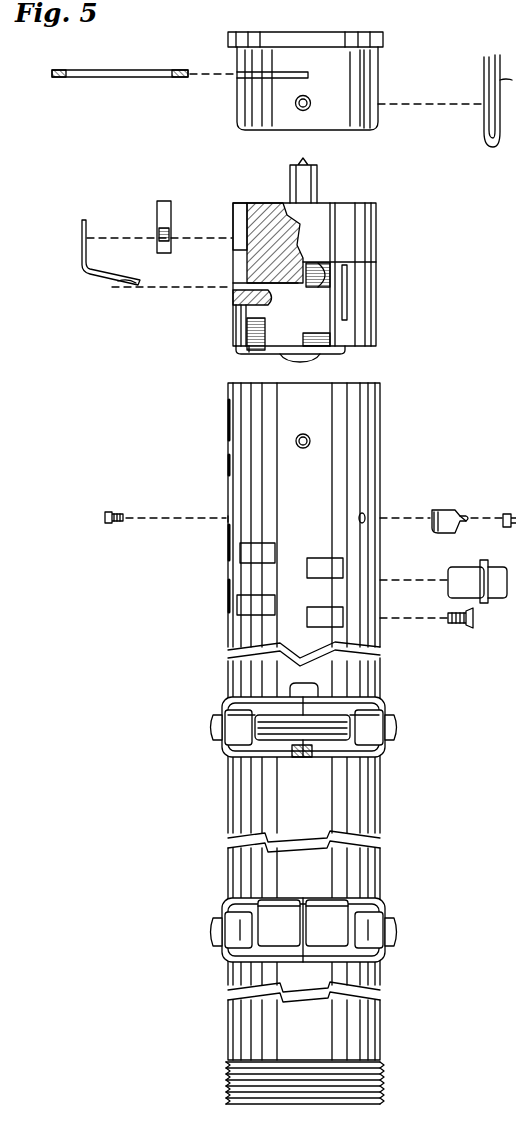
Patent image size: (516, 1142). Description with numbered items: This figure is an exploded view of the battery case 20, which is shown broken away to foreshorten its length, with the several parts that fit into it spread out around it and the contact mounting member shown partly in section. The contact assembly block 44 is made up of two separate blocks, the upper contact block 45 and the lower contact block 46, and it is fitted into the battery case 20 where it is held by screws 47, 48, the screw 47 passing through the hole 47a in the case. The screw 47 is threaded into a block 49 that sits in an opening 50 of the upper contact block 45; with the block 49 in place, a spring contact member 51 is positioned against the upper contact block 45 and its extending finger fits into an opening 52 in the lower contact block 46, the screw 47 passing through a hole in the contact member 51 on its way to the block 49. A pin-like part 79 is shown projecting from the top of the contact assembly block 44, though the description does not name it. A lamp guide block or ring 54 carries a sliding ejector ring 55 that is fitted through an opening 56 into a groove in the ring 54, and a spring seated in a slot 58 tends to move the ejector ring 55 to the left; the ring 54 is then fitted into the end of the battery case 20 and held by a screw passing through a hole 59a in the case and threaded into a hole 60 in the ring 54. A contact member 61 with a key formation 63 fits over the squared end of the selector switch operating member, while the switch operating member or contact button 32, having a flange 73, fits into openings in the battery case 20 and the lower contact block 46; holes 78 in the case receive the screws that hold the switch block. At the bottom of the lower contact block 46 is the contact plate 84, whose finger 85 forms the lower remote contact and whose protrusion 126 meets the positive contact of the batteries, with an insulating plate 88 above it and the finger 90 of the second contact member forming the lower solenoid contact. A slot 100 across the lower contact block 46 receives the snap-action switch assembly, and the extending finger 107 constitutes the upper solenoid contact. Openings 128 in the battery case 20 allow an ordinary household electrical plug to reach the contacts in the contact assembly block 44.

The battery case 20 is at (376, 452).
The switch operating member or contact button 32 is at (495, 600).
The contact assembly block 44 is at (325, 268).
The upper contact block 45 is at (366, 232).
The lower contact block 46 is at (366, 300).
The screw 47 is at (112, 511).
The hole 47a is at (228, 518).
The screw 48 is at (468, 625).
The block 49 is at (170, 222).
The opening 50 is at (240, 210).
The spring contact member 51 is at (80, 266).
The opening 52 is at (236, 288).
The lamp guide block or ring 54 is at (355, 120).
The sliding ejector ring 55 is at (75, 77).
The opening 56 is at (293, 78).
The slot 58 is at (367, 92).
The hole 59a is at (318, 430).
The hole 60 is at (299, 106).
The contact member 61 is at (443, 533).
The key formation 63 is at (462, 513).
The flange 73 is at (478, 585).
The holes 78 is at (359, 514).
The pin 79 is at (318, 186).
The contact plate 84 is at (262, 352).
The finger 85 is at (262, 335).
The insulating plate 88 is at (345, 352).
The finger 90 is at (318, 333).
The slot 100 is at (348, 276).
The extending finger 107 is at (316, 262).
The protrusion 126 is at (300, 362).
The openings 128 is at (265, 552).